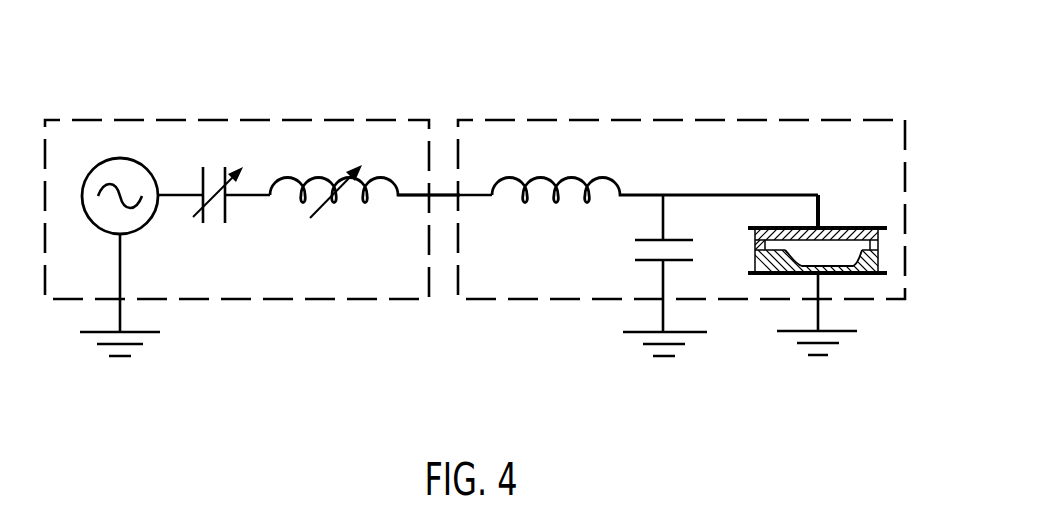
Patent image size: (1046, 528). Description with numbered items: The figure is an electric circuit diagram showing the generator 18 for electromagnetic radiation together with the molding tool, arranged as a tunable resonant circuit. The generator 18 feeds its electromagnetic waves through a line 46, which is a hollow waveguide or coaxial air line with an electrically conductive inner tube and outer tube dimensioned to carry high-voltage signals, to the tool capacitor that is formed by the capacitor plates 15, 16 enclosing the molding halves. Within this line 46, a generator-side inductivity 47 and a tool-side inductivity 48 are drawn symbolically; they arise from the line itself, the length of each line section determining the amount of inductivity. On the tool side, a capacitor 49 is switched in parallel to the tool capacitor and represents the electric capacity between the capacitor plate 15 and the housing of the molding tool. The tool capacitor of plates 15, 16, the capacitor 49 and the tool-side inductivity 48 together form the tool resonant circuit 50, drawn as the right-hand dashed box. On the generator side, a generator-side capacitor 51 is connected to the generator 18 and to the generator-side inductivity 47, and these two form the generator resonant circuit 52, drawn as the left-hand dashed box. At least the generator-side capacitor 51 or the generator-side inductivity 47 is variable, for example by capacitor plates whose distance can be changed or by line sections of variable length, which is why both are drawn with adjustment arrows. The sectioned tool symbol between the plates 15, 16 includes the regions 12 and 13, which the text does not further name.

The generator 18 is at (127, 157).
The generator resonant circuit 52 is at (253, 119).
The generator-side inductivity 47 is at (337, 180).
The line 46 is at (443, 195).
The tool-side inductivity 48 is at (540, 180).
The tool resonant circuit 50 is at (678, 120).
The generator-side capacitor 51 is at (225, 223).
The tool-side capacitor 49 is at (692, 253).
The capacitor plate 15 is at (880, 228).
The cavity / substrate 12 is at (878, 243).
The lower layer 13 is at (878, 262).
The capacitor plate 16 is at (863, 275).